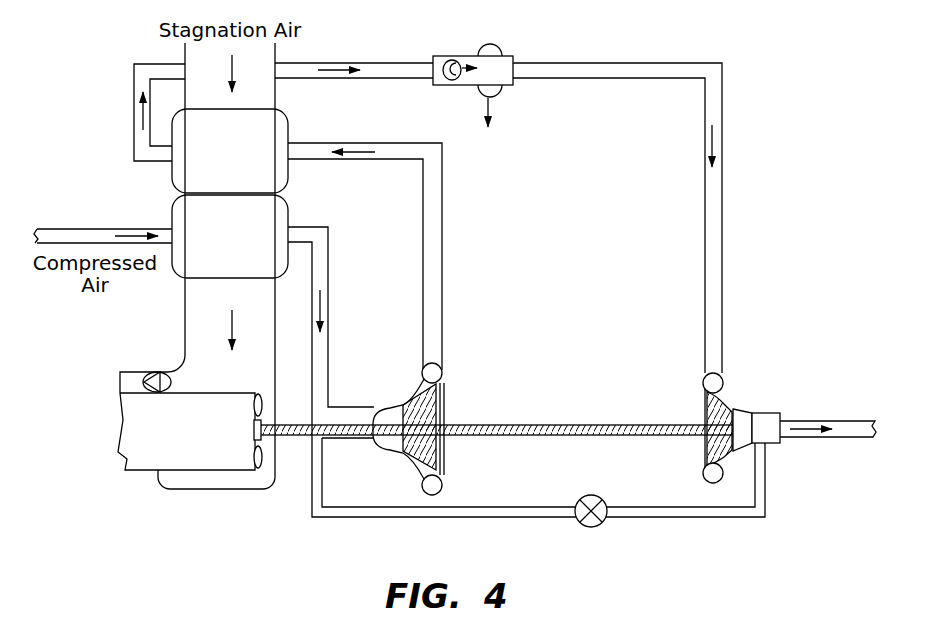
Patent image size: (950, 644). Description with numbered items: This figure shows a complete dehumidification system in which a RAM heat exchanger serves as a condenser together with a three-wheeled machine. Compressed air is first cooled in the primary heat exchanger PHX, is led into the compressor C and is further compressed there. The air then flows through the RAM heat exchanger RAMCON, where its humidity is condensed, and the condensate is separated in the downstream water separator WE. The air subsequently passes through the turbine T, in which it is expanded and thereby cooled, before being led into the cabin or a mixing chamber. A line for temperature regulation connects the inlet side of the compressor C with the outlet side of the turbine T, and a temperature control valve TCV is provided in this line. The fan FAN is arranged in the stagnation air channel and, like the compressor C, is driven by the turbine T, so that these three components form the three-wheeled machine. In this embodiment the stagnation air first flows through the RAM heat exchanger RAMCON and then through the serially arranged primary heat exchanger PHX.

The RAM heat exchanger RAMCON is at (230, 151).
The primary heat exchanger PHX is at (230, 236).
The water separator WE is at (472, 77).
The fan FAN is at (190, 431).
The compressor C is at (426, 429).
The turbine T is at (724, 428).
The temperature control valve TCV is at (591, 500).